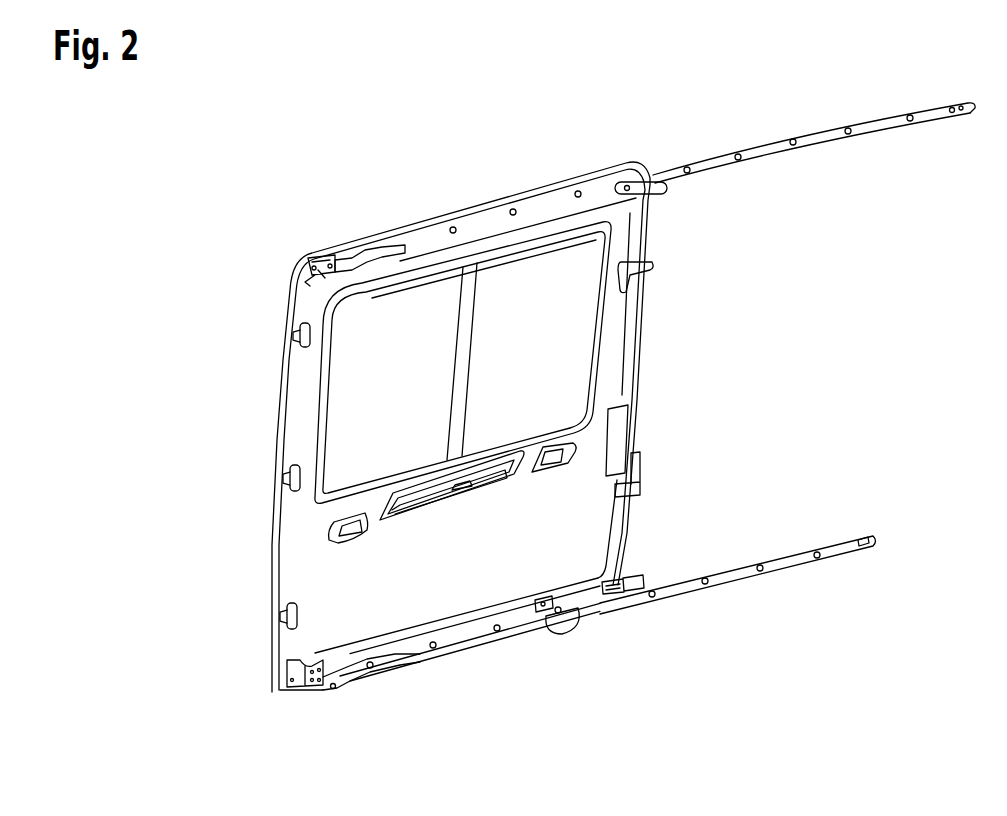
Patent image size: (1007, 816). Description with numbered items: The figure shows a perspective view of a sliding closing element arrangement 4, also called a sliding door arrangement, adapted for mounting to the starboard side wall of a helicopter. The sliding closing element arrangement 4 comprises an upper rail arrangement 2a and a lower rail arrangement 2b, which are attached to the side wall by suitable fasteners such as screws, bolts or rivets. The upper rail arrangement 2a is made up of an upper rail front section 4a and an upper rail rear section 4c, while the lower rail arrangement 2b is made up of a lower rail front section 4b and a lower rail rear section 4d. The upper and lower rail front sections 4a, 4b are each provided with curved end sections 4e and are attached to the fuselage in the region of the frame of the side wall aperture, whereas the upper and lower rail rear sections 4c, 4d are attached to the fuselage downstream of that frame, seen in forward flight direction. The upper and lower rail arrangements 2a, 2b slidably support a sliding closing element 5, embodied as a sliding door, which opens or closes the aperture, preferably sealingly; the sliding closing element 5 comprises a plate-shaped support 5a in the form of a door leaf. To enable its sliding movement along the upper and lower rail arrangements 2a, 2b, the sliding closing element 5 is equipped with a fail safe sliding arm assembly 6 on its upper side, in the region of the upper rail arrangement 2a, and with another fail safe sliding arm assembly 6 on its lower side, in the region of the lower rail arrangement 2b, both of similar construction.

The upper rail arrangement 2a is at (721, 141).
The lower rail arrangement 2b is at (641, 619).
The sliding closing element arrangement 4 is at (297, 237).
The upper rail front section 4a is at (483, 222).
The lower rail front section 4b is at (467, 633).
The upper rail rear section 4c is at (878, 122).
The lower rail rear section 4d is at (796, 562).
The curved end section 4e is at (385, 268).
The sliding closing element 5 is at (297, 415).
The plate-shaped support 5a is at (377, 605).
The fail safe sliding arm assembly 6 is at (343, 242).